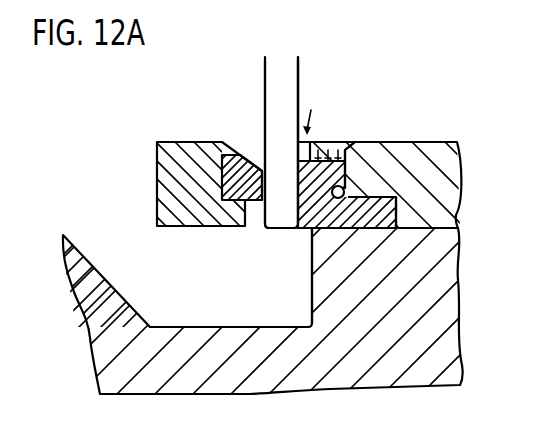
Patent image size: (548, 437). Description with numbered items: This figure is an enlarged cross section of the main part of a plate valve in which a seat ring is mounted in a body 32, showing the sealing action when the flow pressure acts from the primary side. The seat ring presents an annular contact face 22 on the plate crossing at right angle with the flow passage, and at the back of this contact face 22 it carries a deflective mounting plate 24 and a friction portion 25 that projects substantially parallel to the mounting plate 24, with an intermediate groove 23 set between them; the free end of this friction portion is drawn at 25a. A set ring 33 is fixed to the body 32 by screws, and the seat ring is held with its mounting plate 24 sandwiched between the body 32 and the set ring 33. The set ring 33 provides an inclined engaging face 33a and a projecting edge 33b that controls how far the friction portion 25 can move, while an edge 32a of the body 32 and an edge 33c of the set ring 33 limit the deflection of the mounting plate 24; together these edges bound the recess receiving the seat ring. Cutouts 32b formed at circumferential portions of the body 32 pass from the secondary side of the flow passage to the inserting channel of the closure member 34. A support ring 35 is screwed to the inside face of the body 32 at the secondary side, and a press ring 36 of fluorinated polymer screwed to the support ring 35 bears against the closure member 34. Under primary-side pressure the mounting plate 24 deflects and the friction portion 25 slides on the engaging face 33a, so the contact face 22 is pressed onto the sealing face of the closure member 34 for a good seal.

The contact face 22 is at (296, 182).
The intermediate groove 23 is at (344, 189).
The deflective mounting plate 24 is at (329, 213).
The friction portion 25 is at (330, 172).
The spring strip end 25a is at (347, 161).
The body 32 is at (226, 375).
The edge of the body 32a is at (310, 245).
The cutouts 32b is at (240, 313).
The set ring 33 is at (438, 198).
The engaging face 33a is at (322, 182).
The projecting edge 33b is at (318, 134).
The edge of the set ring 33c is at (360, 220).
The closure member 34 is at (283, 70).
The support ring 35 is at (170, 181).
The press ring 36 is at (258, 203).